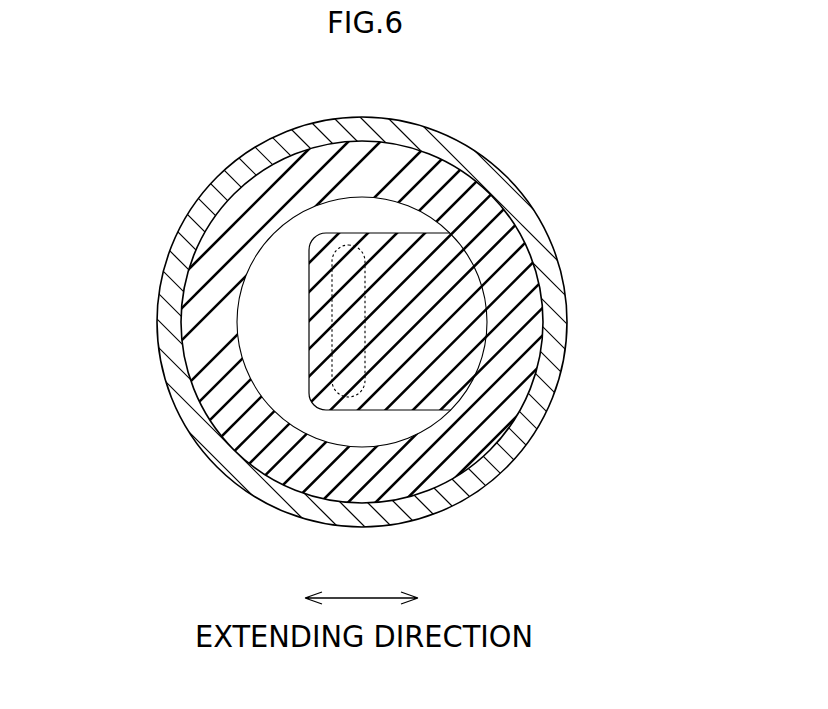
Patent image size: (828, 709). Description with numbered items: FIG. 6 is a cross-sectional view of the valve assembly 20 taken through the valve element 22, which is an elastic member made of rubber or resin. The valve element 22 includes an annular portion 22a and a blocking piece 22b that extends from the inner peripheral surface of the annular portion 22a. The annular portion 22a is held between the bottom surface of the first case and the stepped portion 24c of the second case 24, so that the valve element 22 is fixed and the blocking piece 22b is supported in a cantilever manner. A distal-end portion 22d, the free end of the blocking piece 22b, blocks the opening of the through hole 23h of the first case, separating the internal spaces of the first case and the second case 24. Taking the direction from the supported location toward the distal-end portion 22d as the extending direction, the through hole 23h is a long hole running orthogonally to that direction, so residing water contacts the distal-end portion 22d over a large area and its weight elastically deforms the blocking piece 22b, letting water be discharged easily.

The conductor member 20 is at (414, 338).
The valve element 22 is at (418, 497).
The annular portion 22a is at (182, 399).
The blocking piece 22b is at (407, 420).
The distal-end portion 22d is at (308, 305).
The through hole 23h is at (322, 300).
The second case 24 is at (528, 203).
The stepped portion 24c is at (412, 213).